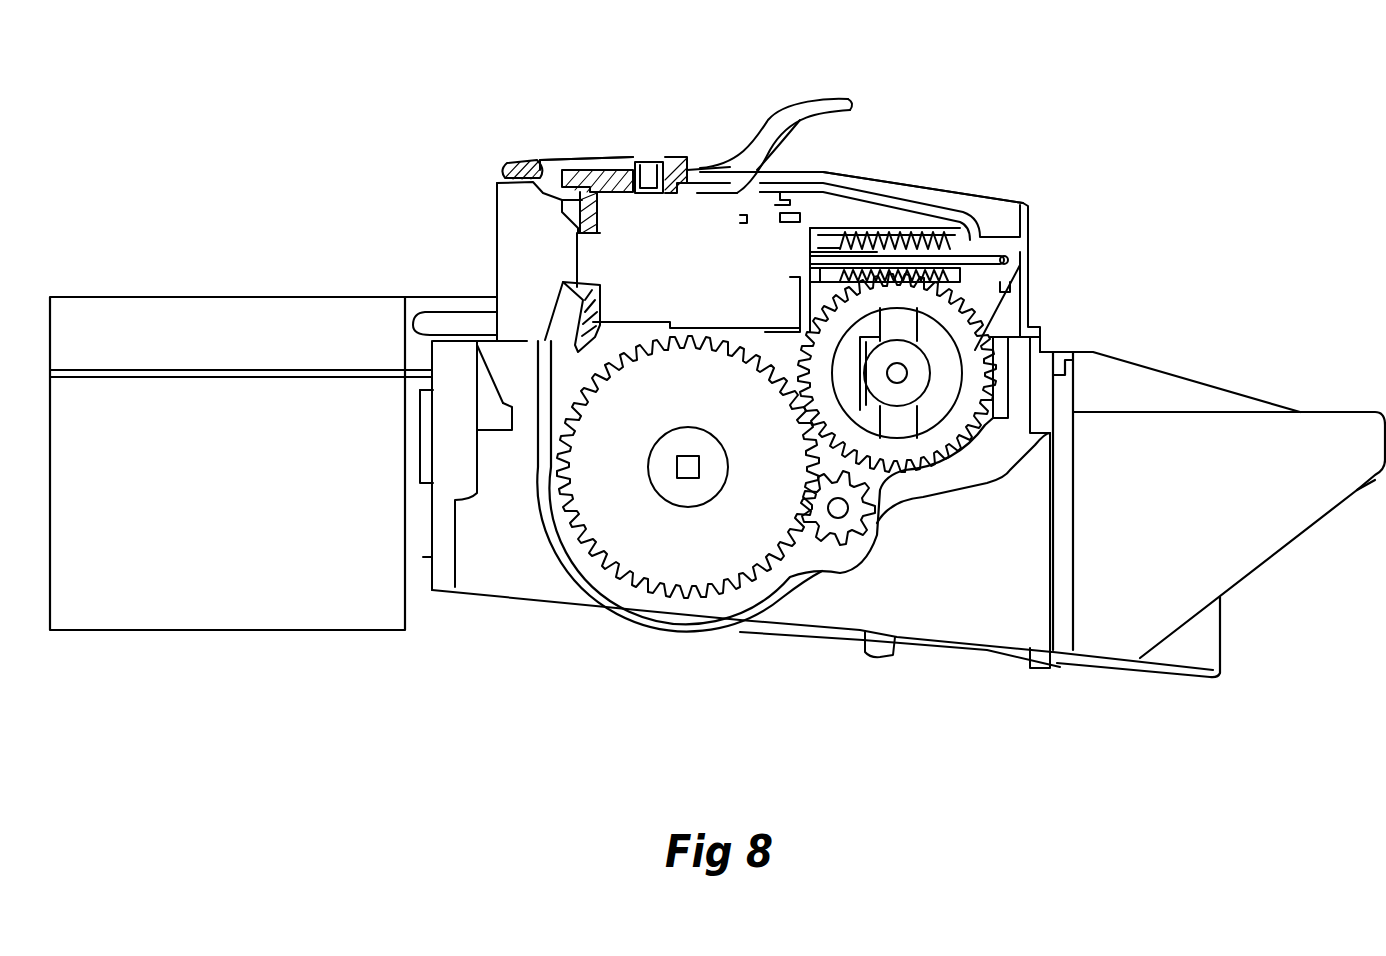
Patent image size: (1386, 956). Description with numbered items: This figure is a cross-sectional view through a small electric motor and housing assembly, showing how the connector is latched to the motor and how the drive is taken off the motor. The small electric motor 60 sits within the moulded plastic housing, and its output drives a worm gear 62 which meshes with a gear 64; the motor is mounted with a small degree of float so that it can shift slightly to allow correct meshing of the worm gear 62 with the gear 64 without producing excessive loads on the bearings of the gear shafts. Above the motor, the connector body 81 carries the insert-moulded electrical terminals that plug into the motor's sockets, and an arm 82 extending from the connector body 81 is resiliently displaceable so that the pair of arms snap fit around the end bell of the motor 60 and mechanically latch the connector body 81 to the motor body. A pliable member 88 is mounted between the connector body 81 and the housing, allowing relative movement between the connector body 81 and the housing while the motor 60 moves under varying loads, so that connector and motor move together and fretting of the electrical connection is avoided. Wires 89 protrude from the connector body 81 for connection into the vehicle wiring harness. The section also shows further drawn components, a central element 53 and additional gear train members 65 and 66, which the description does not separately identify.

The drive shaft / spindle 53 is at (685, 464).
The small electric motor 60 is at (728, 215).
The worm gear 62 is at (932, 262).
The gear 64 is at (990, 345).
The pinion gear 65 is at (885, 530).
The main gear 66 is at (700, 562).
The connector body 81 is at (523, 165).
The arm 82 is at (566, 332).
The pliable member 88 is at (707, 160).
The wires 89 is at (841, 97).